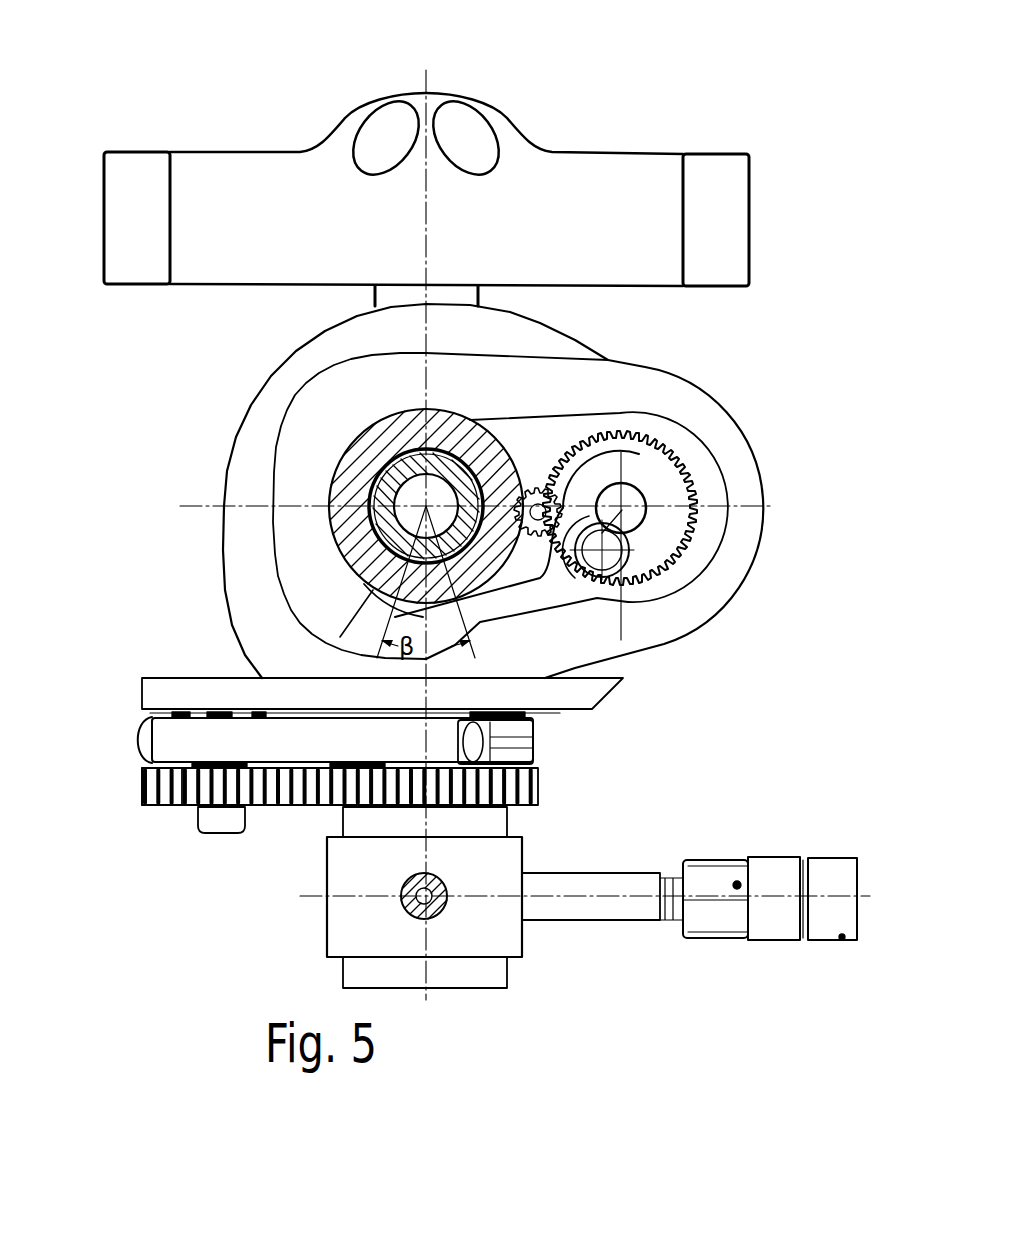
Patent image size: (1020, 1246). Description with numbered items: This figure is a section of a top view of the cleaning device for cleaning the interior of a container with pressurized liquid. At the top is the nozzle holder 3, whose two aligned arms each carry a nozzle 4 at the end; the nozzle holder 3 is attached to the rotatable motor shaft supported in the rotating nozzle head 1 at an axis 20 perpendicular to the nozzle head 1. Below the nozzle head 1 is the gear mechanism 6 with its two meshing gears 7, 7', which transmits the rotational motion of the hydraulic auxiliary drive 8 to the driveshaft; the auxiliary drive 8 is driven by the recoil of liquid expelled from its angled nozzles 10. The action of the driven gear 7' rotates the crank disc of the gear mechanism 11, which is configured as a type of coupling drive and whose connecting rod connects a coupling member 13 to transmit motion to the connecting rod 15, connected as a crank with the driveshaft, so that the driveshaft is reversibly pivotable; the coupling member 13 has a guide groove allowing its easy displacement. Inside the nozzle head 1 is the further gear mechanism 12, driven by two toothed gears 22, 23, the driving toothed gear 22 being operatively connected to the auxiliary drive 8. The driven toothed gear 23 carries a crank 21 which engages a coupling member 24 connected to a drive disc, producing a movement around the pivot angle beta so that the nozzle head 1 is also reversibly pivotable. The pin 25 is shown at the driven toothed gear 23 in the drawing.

The nozzle head 1 is at (222, 456).
The nozzle holder 3 is at (514, 110).
The nozzle 4 is at (140, 145).
The gear mechanism 6 is at (132, 804).
The gear 7 is at (370, 817).
The driven gear 7' is at (162, 872).
The hydraulic auxiliary drive 8 is at (627, 932).
The nozzle 10 is at (830, 880).
The gear mechanism 11 is at (178, 710).
The further gear mechanism 12 is at (553, 612).
The coupling member 13 is at (282, 738).
The connecting rod 15 is at (527, 740).
The axis 20 is at (405, 462).
The crank 21 is at (345, 522).
The driving toothed gear 22 is at (540, 492).
The driven toothed gear 23 is at (653, 477).
The coupling member 24 is at (513, 600).
The pin 25 is at (632, 548).